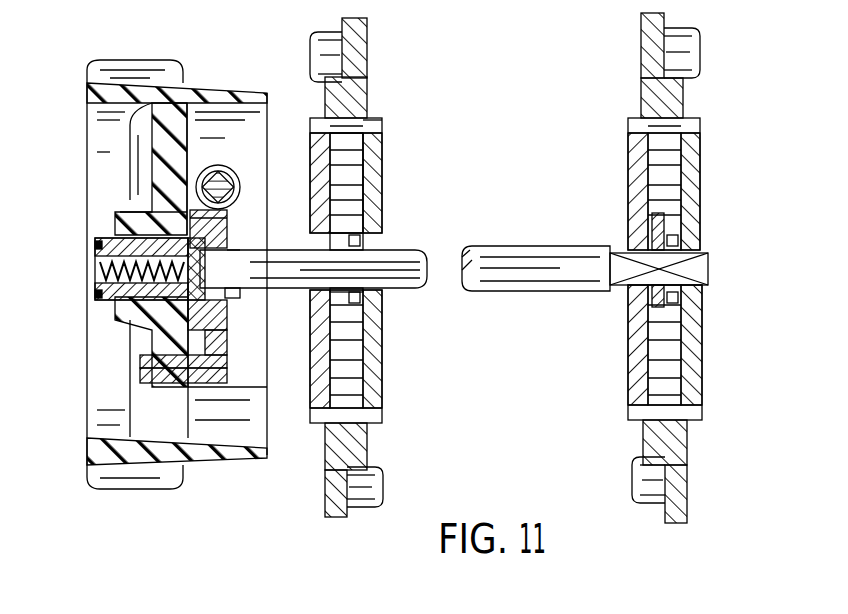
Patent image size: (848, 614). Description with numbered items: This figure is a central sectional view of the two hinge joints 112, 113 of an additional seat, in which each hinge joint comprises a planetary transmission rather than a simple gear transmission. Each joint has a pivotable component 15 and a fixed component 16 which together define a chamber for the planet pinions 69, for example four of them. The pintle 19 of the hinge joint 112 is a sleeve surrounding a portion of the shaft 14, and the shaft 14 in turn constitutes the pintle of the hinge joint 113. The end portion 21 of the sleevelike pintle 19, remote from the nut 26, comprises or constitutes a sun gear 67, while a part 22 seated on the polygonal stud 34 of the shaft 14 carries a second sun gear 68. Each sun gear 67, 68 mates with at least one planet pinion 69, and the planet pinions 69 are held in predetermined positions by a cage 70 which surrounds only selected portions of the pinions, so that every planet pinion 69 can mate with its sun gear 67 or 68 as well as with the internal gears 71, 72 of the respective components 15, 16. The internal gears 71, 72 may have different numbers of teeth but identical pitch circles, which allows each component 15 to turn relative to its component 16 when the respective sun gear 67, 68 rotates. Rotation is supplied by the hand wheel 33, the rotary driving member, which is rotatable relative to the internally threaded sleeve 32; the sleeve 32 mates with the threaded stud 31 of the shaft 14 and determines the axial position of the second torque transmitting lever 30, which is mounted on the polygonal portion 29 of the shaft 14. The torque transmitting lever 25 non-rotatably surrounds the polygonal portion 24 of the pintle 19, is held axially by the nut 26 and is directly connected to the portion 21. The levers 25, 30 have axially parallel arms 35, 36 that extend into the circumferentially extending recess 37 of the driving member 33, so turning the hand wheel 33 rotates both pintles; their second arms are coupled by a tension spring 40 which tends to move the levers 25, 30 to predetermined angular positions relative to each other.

The shaft 14 is at (503, 262).
The pivotable component 15 is at (355, 35).
The fixed component 16 is at (338, 503).
The pintle 19 is at (255, 248).
The end portion of the pintle 21 is at (370, 213).
The part on the polygonal portion of the shaft 22 is at (677, 222).
The polygonal portion 24 is at (268, 298).
The lever 25 is at (237, 217).
The nut 26 is at (150, 212).
The polygonal portion 29 is at (150, 332).
The second torque transmitting element 30 is at (130, 233).
The stud 31 is at (113, 278).
The sleeve 32 is at (105, 249).
The hand wheel 33 is at (147, 65).
The polygonal stud 34 is at (700, 267).
The arm 35 is at (150, 385).
The arm 36 is at (160, 363).
The recess 37 is at (135, 408).
The tension spring 40 is at (222, 167).
The sun gear 67 is at (372, 304).
The second sun gear 68 is at (650, 298).
The planet pinion 69 is at (347, 182).
The cage 70 is at (362, 235).
The internal gear 71 is at (367, 118).
The internal gear 72 is at (332, 118).
The hinge joint 112 is at (398, 129).
The hinge joint 113 is at (599, 144).